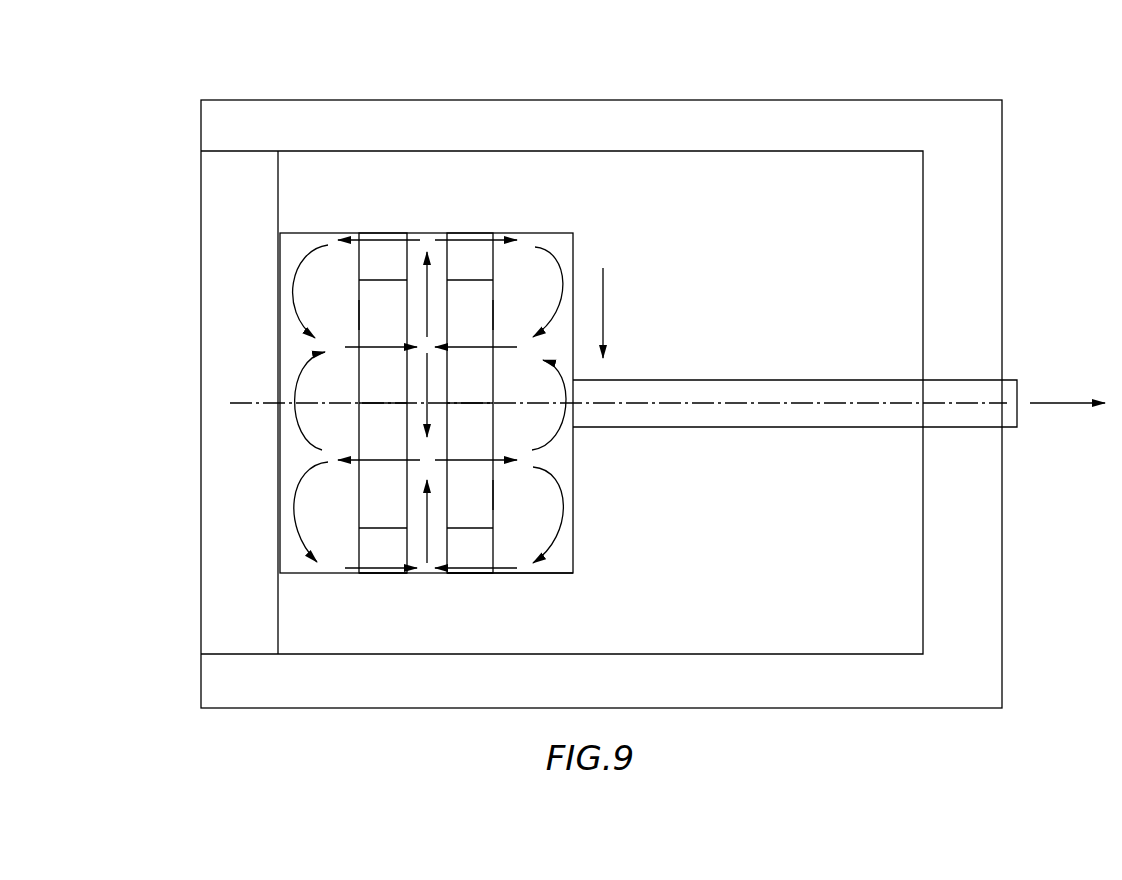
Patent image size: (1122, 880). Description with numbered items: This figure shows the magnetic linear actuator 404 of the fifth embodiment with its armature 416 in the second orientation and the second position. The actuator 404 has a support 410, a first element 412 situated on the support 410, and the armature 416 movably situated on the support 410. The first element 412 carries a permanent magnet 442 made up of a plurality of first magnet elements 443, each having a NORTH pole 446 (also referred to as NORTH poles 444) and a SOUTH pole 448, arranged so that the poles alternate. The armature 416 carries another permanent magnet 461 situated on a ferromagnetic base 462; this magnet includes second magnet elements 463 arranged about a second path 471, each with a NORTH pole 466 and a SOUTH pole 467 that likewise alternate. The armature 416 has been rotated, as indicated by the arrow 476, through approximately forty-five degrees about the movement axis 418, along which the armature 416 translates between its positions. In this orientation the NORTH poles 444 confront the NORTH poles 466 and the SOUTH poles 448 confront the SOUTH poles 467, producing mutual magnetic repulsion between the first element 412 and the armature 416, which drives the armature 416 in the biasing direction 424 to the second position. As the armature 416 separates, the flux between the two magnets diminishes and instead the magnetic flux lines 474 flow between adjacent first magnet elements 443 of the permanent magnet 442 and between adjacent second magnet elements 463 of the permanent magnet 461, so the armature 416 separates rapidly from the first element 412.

The actuator 404 is at (688, 92).
The support 410 is at (520, 100).
The first element 412 is at (293, 228).
The armature 416 is at (552, 226).
The movement axis 418 is at (703, 397).
The biasing direction 424 is at (1048, 403).
The permanent magnet 442 is at (383, 227).
The first magnet elements 443 is at (358, 283).
The NORTH poles 444 is at (358, 253).
The NORTH pole 446 is at (408, 578).
The SOUTH pole 448 is at (420, 318).
The permanent magnet 461 is at (471, 226).
The base 462 is at (567, 575).
The second magnet elements 463 is at (497, 263).
The NORTH pole 466 is at (497, 258).
The SOUTH pole 467 is at (447, 252).
The second path 471 is at (455, 577).
The magnetic flux lines 474 is at (397, 237).
The arrow 476 is at (636, 301).